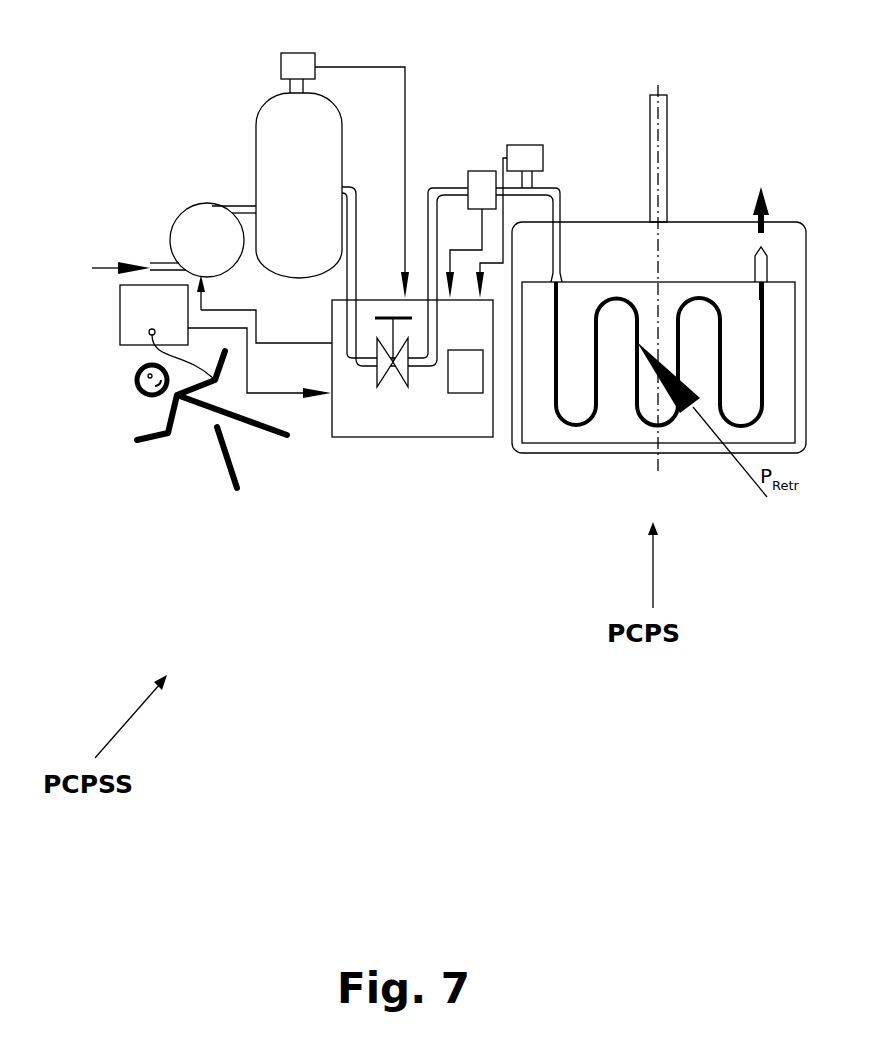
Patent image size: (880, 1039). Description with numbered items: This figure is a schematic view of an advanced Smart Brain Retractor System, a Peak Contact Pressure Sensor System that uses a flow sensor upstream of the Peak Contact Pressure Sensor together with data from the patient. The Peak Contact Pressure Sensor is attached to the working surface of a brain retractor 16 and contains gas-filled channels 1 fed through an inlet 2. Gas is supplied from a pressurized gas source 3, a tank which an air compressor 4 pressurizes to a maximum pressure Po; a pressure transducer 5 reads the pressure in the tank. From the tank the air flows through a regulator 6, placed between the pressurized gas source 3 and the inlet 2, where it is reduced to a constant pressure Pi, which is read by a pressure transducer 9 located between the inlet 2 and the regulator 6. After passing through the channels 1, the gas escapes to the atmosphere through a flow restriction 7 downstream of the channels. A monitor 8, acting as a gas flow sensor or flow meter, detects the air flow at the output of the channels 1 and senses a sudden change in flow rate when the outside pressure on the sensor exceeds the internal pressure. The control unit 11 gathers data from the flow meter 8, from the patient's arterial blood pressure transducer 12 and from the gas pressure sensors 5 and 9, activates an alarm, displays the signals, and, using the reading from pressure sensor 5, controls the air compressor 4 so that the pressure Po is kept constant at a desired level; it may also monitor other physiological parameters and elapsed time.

The gas-filled channels 1 is at (659, 359).
The inlet 2 is at (557, 257).
The pressurized gas source 3 is at (299, 178).
The compressor 4 is at (203, 240).
The pressure transducer 5 is at (281, 67).
The regulator 6 is at (383, 367).
The flow restriction 7 is at (755, 262).
The monitor 8 is at (482, 175).
The pressure transducer 9 is at (535, 145).
The control unit 11 is at (422, 428).
The pressure transducer 12 is at (140, 340).
The anatomical retractor 16 is at (697, 230).